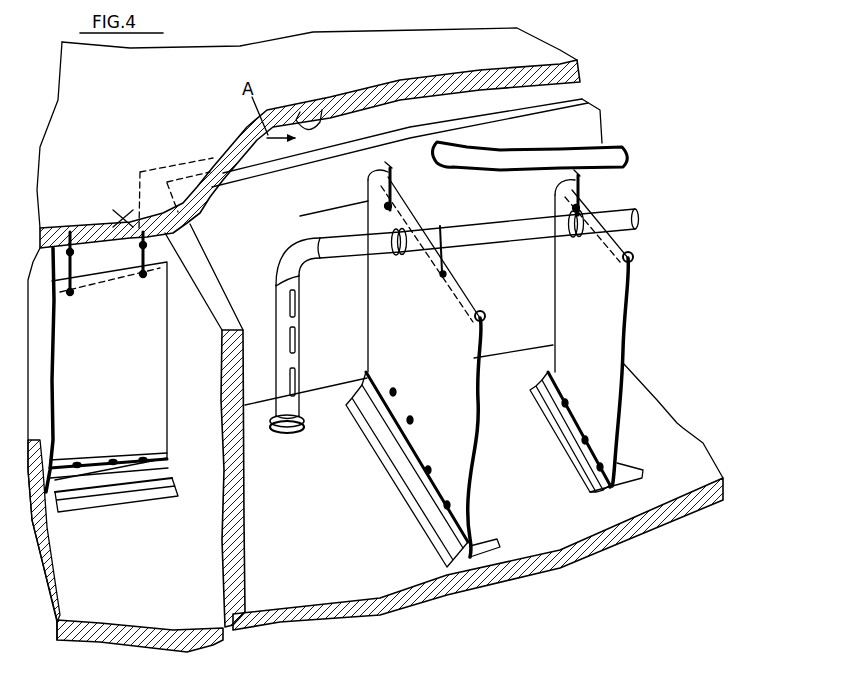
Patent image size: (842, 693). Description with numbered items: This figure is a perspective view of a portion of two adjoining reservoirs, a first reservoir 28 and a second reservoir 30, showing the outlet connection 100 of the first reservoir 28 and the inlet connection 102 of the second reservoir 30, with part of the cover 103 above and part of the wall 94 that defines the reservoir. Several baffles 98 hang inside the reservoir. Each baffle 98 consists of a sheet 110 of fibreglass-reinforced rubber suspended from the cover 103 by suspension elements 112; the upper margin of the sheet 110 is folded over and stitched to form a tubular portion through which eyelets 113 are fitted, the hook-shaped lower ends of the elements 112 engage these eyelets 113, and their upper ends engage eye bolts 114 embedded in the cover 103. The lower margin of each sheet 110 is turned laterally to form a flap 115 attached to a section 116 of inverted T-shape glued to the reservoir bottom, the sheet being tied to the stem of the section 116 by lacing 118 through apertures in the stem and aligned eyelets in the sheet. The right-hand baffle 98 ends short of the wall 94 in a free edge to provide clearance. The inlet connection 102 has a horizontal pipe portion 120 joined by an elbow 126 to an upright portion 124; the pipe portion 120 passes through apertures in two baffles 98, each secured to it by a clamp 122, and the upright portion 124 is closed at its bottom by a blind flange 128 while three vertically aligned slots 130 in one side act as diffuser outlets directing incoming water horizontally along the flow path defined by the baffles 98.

The reservoir 28 is at (463, 110).
The reservoir 30 is at (642, 262).
The wall 94 is at (275, 203).
The baffle 98 is at (174, 441).
The outlet connection 100 is at (380, 127).
The inlet connection 102 is at (638, 221).
The cover 103 is at (167, 128).
The sheet 110 is at (128, 355).
The suspension element 112 is at (140, 253).
The eyelet 113 is at (141, 276).
The eye bolt 114 is at (86, 228).
The flap 115 is at (53, 433).
The section of inverted T-shape 116 is at (118, 519).
The lacing 118 is at (112, 464).
The horizontal pipe portion 120 is at (512, 243).
The clamp 122 is at (399, 256).
The upright portion 124 is at (277, 298).
The elbow 126 is at (291, 256).
The blind flange 128 is at (297, 428).
The slot 130 is at (300, 372).